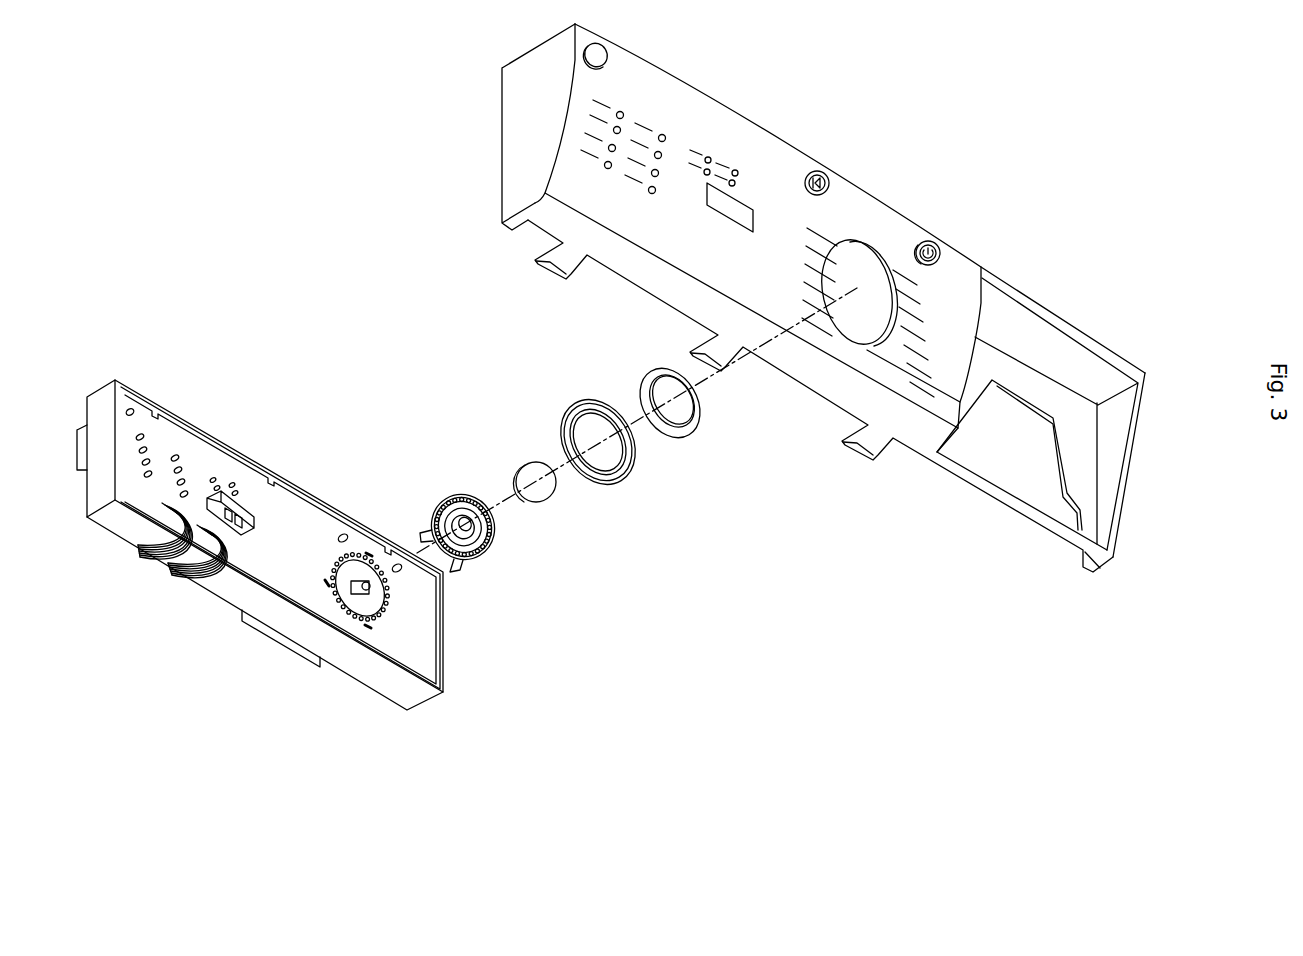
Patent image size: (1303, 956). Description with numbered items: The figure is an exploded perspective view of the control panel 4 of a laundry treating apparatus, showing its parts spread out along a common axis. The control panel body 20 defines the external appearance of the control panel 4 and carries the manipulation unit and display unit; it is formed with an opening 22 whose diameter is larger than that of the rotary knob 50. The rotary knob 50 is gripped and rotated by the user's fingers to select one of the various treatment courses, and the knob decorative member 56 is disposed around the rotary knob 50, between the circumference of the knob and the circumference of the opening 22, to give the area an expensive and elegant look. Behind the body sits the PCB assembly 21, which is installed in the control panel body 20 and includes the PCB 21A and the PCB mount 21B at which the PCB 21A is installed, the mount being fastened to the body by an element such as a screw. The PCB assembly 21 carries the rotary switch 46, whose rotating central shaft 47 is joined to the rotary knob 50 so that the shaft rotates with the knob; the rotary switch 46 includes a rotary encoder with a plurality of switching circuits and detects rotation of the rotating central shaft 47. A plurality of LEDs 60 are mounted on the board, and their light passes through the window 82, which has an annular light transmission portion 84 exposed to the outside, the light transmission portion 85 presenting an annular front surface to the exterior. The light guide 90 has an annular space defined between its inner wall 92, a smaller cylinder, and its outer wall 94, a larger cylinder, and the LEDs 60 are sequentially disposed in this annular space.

The control panel 4 is at (836, 654).
The control panel body 20 is at (920, 427).
The printed circuit board (PCB) assembly 21 is at (211, 619).
The PCB 21A is at (287, 542).
The PCB mount 21B is at (250, 462).
The opening 22 is at (873, 245).
The rotary switch 46 is at (385, 600).
The rotating central shaft 47 is at (358, 583).
The rotary knob 50 is at (545, 503).
The knob decorative member 56 is at (692, 427).
The LEDs 60 is at (391, 629).
The window 82 is at (558, 447).
The annular light transmission portion 84 is at (581, 403).
The light transmission portion 85 is at (617, 483).
The light guide 90 is at (492, 536).
The inner wall 92 is at (463, 497).
The outer wall 94 is at (460, 568).